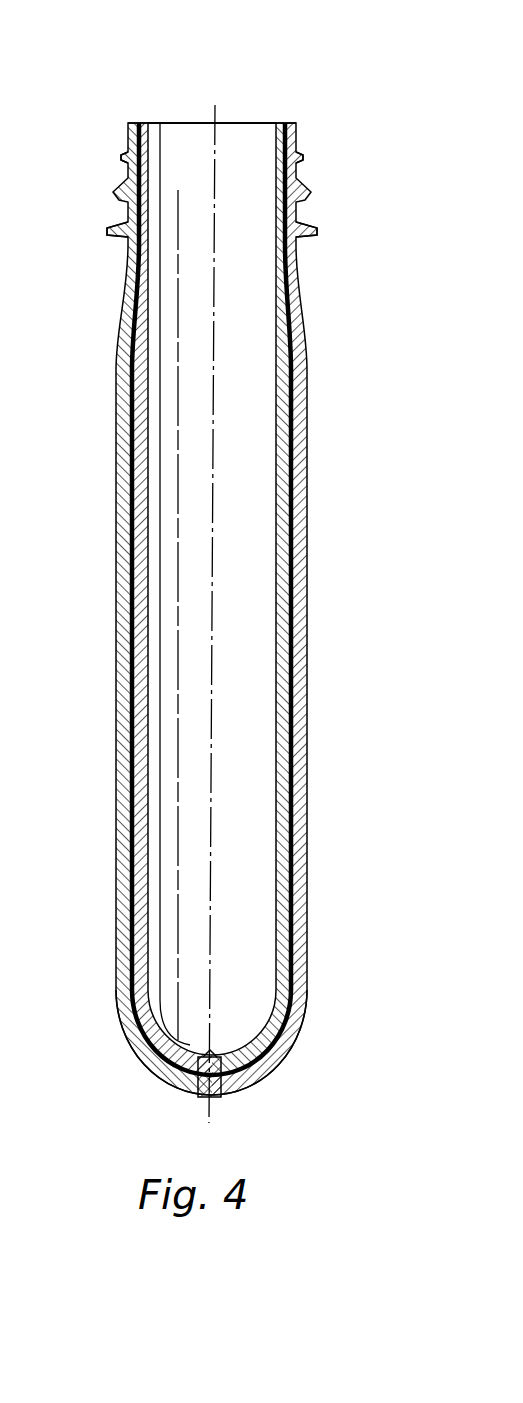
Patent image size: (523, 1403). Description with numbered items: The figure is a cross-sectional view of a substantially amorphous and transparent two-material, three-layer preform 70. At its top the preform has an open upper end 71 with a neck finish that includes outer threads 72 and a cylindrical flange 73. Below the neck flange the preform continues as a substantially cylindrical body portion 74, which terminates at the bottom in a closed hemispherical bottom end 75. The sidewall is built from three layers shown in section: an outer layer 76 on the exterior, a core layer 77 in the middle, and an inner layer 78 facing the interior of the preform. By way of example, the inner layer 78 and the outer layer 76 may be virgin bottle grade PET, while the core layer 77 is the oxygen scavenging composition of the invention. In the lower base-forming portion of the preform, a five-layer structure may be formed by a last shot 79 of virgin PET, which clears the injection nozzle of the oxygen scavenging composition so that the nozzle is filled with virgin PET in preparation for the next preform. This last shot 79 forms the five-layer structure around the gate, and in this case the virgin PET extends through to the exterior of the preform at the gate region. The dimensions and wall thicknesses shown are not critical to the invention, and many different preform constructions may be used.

The three-layer preform 70 is at (318, 332).
The open upper end 71 is at (243, 123).
The outer threads 72 is at (300, 157).
The cylindrical flange 73 is at (318, 236).
The cylindrical body portion 74 is at (300, 498).
The closed hemispherical bottom end 75 is at (275, 1062).
The outer layer 76 is at (118, 437).
The core layer 77 is at (125, 465).
The inner layer 78 is at (143, 513).
The last shot 79 is at (218, 1092).